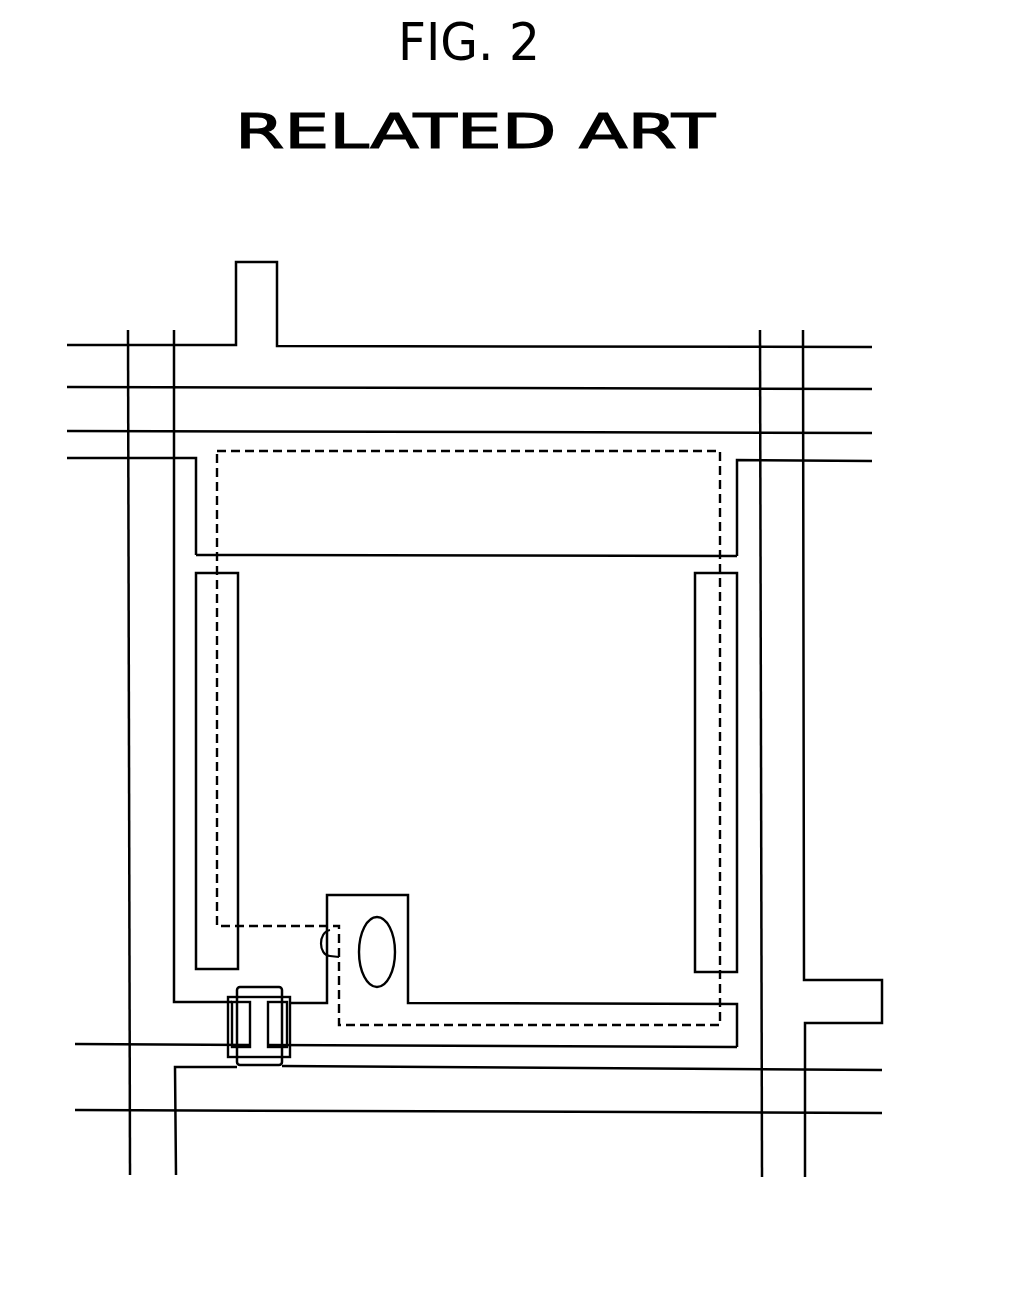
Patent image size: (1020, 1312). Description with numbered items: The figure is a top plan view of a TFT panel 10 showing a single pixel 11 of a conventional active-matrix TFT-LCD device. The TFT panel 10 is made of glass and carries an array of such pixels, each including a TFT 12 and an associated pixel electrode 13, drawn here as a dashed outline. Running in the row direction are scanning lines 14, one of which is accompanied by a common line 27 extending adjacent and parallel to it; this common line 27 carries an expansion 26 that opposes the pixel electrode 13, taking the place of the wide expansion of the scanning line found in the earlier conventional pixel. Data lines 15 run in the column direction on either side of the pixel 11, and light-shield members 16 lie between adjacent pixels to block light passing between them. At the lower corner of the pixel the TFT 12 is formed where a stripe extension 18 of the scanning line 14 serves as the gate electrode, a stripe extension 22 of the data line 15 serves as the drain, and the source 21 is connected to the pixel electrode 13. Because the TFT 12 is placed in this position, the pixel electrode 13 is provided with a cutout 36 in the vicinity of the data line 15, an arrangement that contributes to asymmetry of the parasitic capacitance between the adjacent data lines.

The TFT panel 10 is at (623, 283).
The pixel 11 is at (413, 325).
The TFT 12 is at (296, 950).
The pixel electrode 13 is at (680, 450).
The scanning line 14 is at (839, 375).
The data line 15 is at (807, 850).
The light-shield member 16 is at (196, 712).
The stripe extension 18 is at (262, 987).
The source 21 is at (318, 1047).
The stripe extension 22 is at (207, 1047).
The expansion 26 is at (397, 560).
The common line 27 is at (838, 470).
The cutout 36 is at (323, 938).